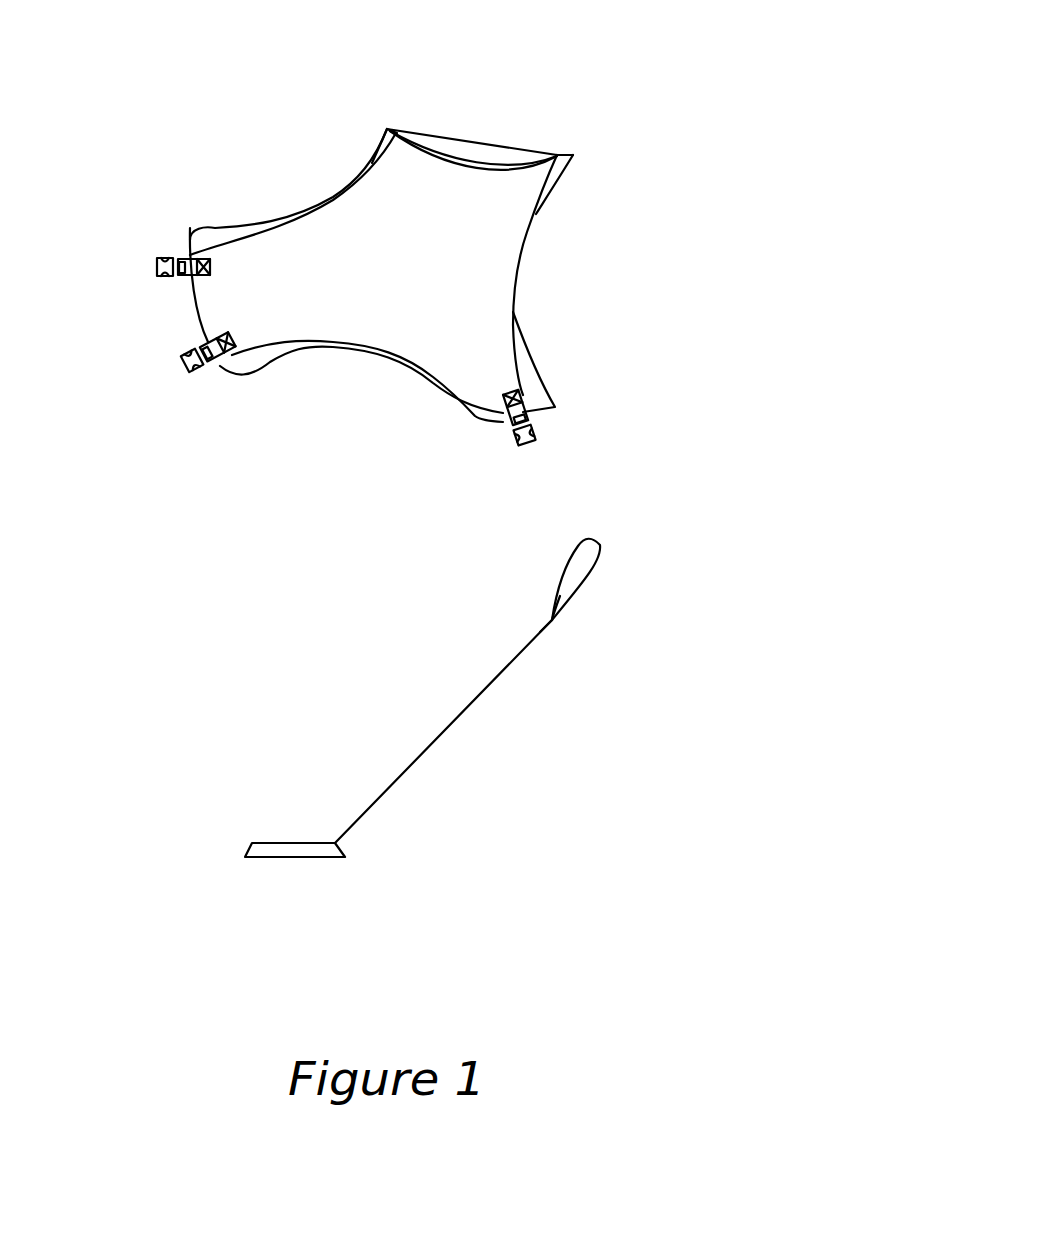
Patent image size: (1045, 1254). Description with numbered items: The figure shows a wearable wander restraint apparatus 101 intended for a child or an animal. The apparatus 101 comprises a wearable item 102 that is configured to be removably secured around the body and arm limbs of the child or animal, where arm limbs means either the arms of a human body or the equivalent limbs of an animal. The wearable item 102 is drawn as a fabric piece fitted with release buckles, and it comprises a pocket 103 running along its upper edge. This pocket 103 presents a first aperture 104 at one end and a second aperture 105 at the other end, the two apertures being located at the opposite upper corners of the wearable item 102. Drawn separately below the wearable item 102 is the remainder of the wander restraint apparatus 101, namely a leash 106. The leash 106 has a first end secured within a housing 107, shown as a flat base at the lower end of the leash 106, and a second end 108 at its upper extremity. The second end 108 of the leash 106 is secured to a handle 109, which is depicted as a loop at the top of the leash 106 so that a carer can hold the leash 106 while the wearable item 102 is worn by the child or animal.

The wander restraint apparatus 101 is at (385, 234).
The wearable item 102 is at (483, 280).
The pocket 103 is at (477, 158).
The first aperture 104 is at (392, 133).
The second aperture 105 is at (560, 153).
The leash 106 is at (450, 723).
The housing 107 is at (258, 852).
The second end 108 is at (555, 617).
The handle 109 is at (602, 547).